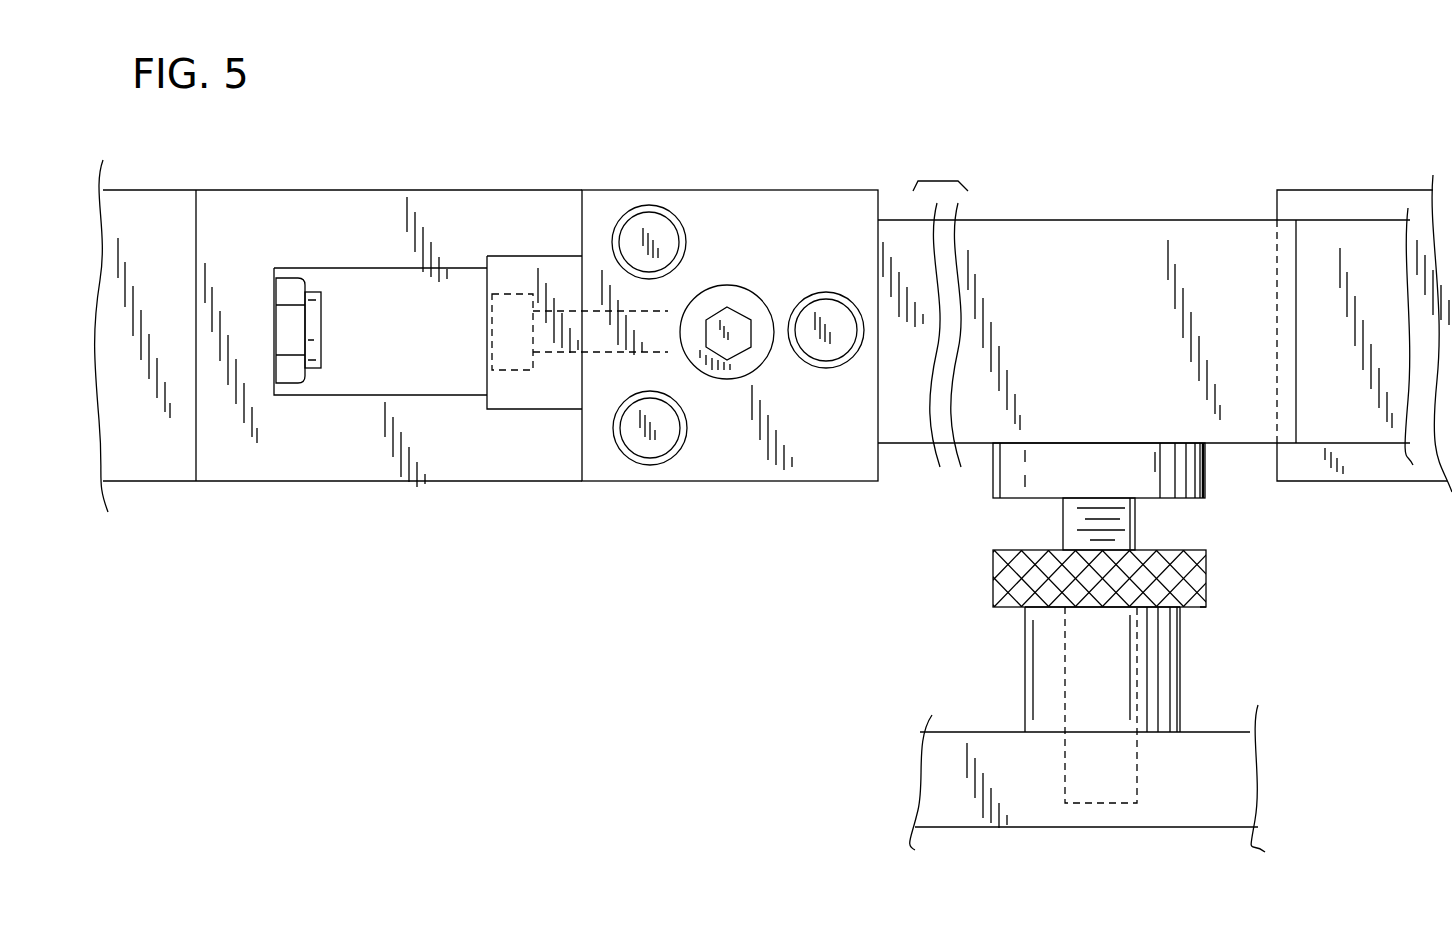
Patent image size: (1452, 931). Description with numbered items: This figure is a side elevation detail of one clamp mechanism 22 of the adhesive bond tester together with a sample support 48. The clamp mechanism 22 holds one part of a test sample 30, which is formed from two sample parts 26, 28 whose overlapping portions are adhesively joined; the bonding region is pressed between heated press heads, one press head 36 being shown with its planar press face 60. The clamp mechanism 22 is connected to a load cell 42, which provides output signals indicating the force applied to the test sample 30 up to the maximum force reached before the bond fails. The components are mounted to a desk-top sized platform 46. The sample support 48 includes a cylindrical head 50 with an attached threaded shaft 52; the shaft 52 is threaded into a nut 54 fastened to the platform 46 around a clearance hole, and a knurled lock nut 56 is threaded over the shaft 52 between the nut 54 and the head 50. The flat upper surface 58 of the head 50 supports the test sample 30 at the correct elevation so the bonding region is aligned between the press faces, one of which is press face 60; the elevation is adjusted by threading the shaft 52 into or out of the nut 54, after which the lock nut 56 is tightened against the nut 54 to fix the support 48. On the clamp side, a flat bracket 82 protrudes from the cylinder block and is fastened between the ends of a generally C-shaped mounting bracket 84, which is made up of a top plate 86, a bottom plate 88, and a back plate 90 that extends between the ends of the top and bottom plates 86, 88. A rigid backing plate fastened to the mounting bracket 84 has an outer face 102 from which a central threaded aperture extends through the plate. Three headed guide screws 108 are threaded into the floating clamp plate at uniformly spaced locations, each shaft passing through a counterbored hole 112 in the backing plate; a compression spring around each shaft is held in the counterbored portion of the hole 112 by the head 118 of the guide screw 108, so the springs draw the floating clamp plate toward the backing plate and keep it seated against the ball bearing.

The clamp mechanism 22 is at (774, 168).
The sample part 26 is at (1086, 245).
The sample part 28 is at (1305, 323).
The test sample 30 is at (1143, 216).
The heated press head 36 is at (1320, 487).
The load cell 42 is at (137, 205).
The platform 46 is at (1200, 742).
The sample support 48 is at (990, 654).
The cylindrical head 50 is at (1207, 470).
The threaded shaft 52 is at (1125, 518).
The nut 54 is at (1175, 633).
The knurled lock nut 56 is at (1203, 575).
The flat upper surface 58 is at (1052, 438).
The planar press face 60 is at (1333, 203).
The flat bracket 82 is at (530, 397).
The mounting bracket 84 is at (348, 186).
The top plate 86 is at (447, 188).
The bottom plate 88 is at (388, 230).
The back plate 90 is at (236, 295).
The outer face 102 is at (802, 249).
The headed guide screw 108 is at (675, 204).
The counterbored hole 112 is at (633, 263).
The head 118 is at (649, 226).